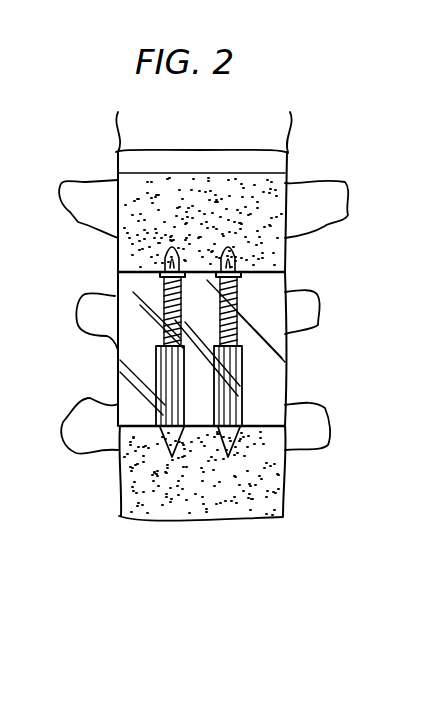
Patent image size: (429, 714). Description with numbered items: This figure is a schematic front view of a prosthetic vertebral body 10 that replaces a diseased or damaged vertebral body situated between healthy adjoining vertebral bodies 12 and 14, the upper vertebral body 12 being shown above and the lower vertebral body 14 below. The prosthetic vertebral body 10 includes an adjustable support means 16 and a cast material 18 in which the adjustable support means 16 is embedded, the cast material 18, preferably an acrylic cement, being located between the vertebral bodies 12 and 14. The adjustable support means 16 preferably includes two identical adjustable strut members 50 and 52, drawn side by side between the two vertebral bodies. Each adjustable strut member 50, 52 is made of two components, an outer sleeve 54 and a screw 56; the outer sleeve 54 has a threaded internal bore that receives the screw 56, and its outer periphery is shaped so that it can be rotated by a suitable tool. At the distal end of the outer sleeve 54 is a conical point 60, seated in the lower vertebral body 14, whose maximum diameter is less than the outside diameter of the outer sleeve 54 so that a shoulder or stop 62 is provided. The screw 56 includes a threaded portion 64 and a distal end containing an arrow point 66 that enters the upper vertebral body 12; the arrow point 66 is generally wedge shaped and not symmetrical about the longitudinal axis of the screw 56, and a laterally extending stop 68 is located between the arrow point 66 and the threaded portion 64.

The prosthetic vertebral body 10 is at (334, 342).
The adjoining vertebral body 12 is at (272, 188).
The adjoining vertebral body 14 is at (172, 516).
The adjustable support means 16 is at (215, 392).
The cast material 18 is at (245, 393).
The adjustable strut member 50 is at (160, 345).
The adjustable strut member 52 is at (242, 356).
The outer sleeve 54 is at (160, 420).
The screw 56 is at (183, 292).
The conical point 60 is at (184, 440).
The shoulder or stop 62 is at (160, 430).
The threaded portion 64 is at (145, 293).
The arrow point 66 is at (228, 246).
The laterally extending stop 68 is at (160, 277).